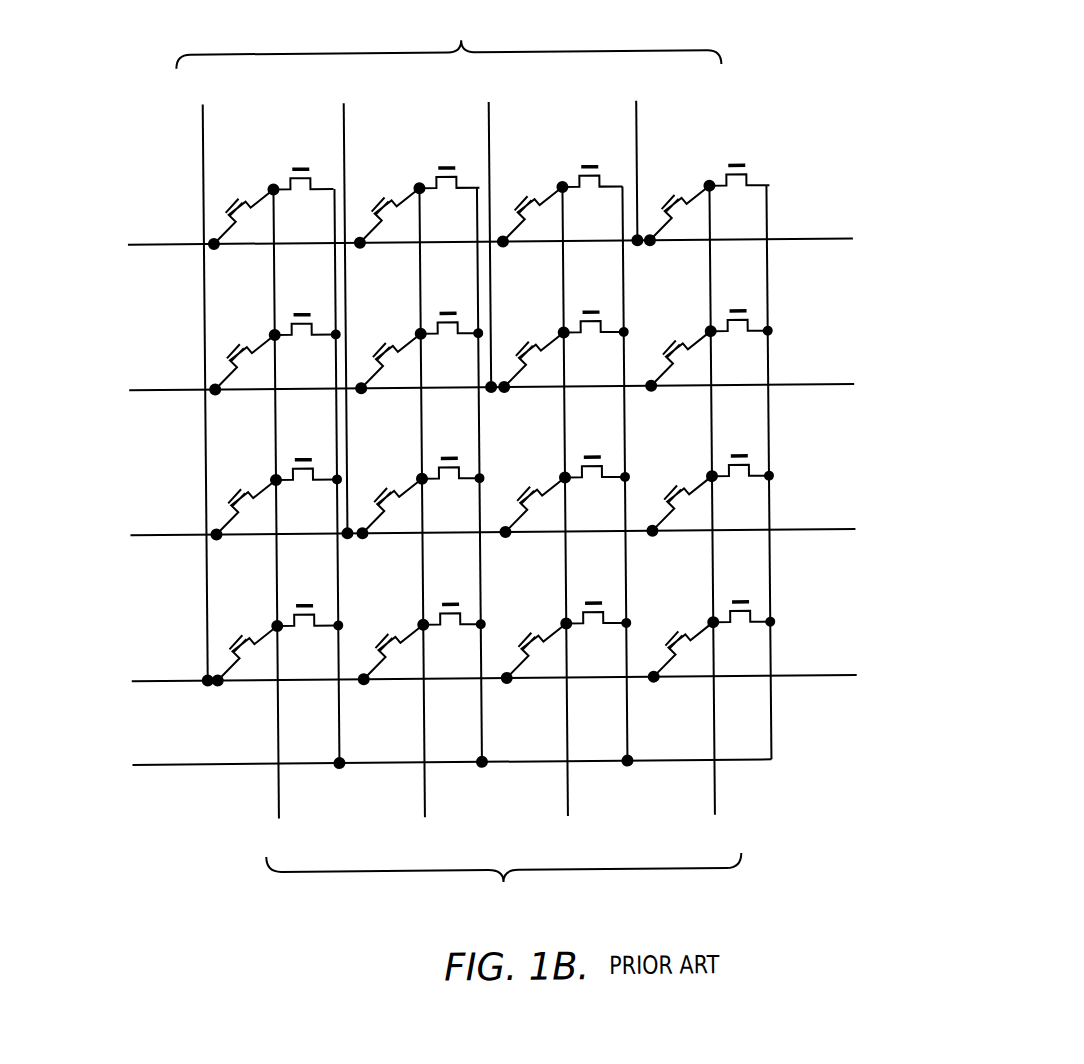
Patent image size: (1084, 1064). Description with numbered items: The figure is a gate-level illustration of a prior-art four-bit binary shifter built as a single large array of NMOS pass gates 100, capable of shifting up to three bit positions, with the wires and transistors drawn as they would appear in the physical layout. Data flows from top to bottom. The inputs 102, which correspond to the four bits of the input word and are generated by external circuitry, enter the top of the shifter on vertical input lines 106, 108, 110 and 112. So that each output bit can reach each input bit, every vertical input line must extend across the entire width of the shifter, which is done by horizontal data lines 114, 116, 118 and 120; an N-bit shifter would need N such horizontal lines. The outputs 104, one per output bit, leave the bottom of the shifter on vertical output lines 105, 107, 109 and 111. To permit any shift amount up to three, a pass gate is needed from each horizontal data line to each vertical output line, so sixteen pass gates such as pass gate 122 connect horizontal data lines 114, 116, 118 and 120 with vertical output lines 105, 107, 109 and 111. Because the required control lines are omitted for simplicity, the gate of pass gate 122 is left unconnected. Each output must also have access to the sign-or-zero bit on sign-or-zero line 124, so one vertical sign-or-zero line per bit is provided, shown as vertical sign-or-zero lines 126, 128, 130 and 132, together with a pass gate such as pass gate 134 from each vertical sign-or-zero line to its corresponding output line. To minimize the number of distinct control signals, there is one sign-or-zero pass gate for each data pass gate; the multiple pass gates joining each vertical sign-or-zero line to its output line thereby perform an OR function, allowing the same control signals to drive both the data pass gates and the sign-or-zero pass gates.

The array of NMOS pass gates 100 is at (860, 40).
The inputs 102 is at (449, 61).
The outputs 104 is at (498, 867).
The vertical output line 105 is at (712, 802).
The vertical input line 106 is at (640, 134).
The vertical output line 107 is at (565, 802).
The vertical input line 108 is at (492, 136).
The vertical output line 109 is at (422, 802).
The vertical input line 110 is at (347, 136).
The vertical output line 111 is at (276, 802).
The vertical input line 112 is at (206, 136).
The horizontal data line 114 is at (788, 242).
The horizontal data line 116 is at (786, 387).
The horizontal data line 118 is at (786, 532).
The horizontal data line 120 is at (786, 678).
The pass gate 122 is at (668, 189).
The sign-or-zero line 124 is at (210, 762).
The vertical sign-or-zero line 126 is at (769, 722).
The vertical sign-or-zero line 128 is at (625, 722).
The vertical sign-or-zero line 130 is at (480, 722).
The vertical sign-or-zero line 132 is at (337, 722).
The pass gate 134 is at (765, 162).